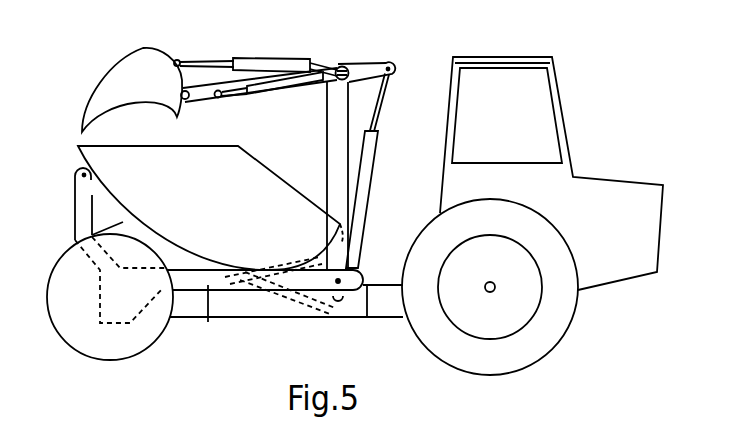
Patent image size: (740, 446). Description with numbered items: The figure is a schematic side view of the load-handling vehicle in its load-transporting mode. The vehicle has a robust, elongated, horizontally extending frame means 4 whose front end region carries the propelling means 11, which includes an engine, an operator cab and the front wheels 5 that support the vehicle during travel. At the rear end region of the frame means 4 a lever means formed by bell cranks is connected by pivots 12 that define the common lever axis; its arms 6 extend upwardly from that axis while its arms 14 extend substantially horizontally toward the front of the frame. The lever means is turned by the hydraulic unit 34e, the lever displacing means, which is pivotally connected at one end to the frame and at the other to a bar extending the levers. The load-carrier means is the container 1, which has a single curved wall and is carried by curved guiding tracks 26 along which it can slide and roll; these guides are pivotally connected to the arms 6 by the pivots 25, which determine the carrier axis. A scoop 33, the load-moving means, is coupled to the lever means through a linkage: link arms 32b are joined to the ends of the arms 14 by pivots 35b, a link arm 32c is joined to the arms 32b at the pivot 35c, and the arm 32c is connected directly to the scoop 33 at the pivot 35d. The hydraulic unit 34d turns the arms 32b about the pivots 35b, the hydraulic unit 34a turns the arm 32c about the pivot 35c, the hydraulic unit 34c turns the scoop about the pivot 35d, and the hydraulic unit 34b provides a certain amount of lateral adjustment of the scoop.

The container 1 is at (210, 201).
The frame means 4 is at (277, 307).
The front wheels 5 is at (520, 360).
The arms 6 is at (80, 207).
The propelling means 11 is at (597, 187).
The pivots 12 is at (110, 310).
The arms 14 is at (208, 319).
The pivots 25 is at (83, 175).
The curved guiding tracks 26 is at (123, 222).
The link arms 32b is at (333, 143).
The link arm 32c is at (372, 63).
The scoop 33 is at (100, 88).
The hydraulic unit 34a is at (372, 160).
The hydraulic unit 34b is at (270, 88).
The hydraulic unit 34c is at (260, 58).
The hydraulic unit 34d is at (307, 262).
The hydraulic unit 34e is at (305, 303).
The pivots 35b is at (338, 278).
The pivot 35c is at (340, 66).
The pivot 35d is at (185, 99).